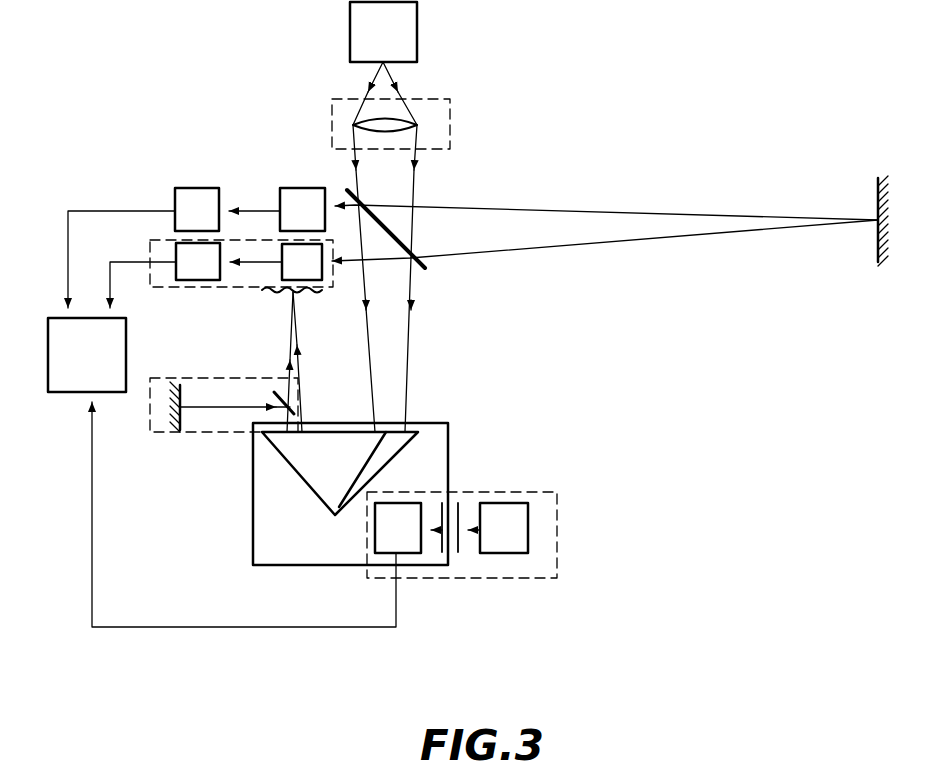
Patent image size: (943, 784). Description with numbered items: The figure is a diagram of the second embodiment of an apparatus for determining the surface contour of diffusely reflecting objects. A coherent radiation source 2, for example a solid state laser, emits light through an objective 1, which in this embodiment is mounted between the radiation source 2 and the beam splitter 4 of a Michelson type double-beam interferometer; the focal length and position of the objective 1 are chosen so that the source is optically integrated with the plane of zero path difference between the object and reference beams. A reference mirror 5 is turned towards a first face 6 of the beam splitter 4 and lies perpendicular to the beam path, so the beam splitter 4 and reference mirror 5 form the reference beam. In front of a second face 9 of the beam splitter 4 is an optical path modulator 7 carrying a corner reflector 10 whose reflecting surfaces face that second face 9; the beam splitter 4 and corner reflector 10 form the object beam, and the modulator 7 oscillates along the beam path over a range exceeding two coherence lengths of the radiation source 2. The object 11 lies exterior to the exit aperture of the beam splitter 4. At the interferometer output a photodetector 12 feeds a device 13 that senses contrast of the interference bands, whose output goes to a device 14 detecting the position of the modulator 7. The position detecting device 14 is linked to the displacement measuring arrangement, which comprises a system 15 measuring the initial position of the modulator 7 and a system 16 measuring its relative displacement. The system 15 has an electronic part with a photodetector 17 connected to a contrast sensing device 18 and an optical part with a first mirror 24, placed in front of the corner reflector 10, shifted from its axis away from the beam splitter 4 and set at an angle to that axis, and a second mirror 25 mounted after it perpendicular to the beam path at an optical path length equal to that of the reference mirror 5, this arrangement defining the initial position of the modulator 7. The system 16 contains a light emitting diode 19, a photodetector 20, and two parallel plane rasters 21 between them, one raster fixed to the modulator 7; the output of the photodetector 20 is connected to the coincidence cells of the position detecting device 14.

The objective 1 is at (391, 124).
The coherent radiation source 2 is at (383, 32).
The beam splitter 4 is at (418, 262).
The reference mirror 5 is at (872, 260).
The first face 6 is at (366, 205).
The optical path modulator 7 is at (350, 494).
The second face 9 is at (400, 250).
The corner reflector 10 is at (340, 473).
The object 11 is at (318, 291).
The photodetector 12 is at (302, 209).
The device sensing contrast of interference bands 13 is at (197, 209).
The device detecting position of the optical path modulator 14 is at (87, 355).
The system measuring initial position of the optical path modulator 15 is at (248, 284).
The system measuring relative displacement of the modulator 16 is at (465, 534).
The photodetector 17 is at (302, 262).
The device sensing contrast of interference bands 18 is at (198, 261).
The light emitting diode 19 is at (504, 528).
The photodetector 20 is at (398, 528).
The parallel plane rasters 21 is at (458, 555).
The first mirror 24 is at (276, 410).
The second mirror 25 is at (178, 432).